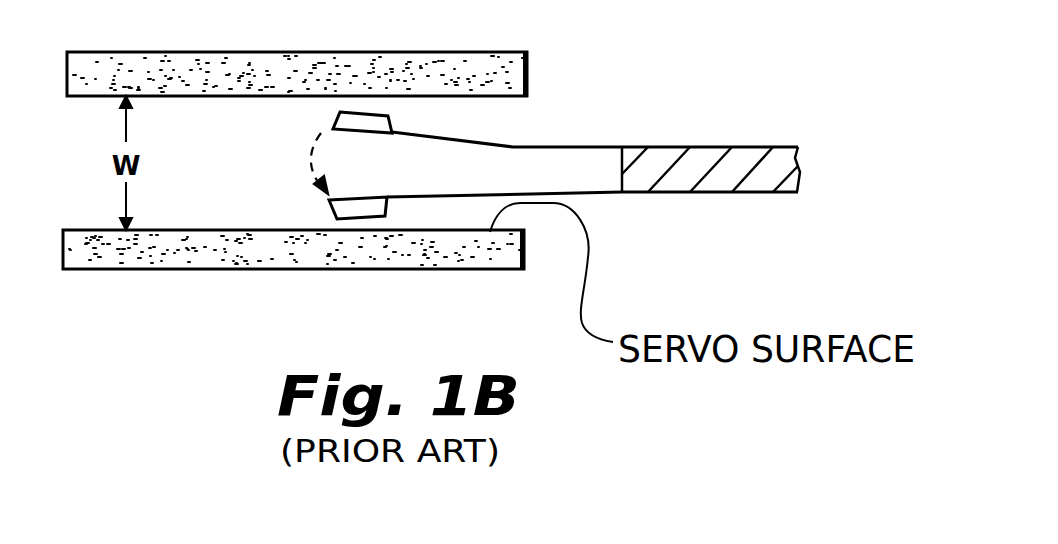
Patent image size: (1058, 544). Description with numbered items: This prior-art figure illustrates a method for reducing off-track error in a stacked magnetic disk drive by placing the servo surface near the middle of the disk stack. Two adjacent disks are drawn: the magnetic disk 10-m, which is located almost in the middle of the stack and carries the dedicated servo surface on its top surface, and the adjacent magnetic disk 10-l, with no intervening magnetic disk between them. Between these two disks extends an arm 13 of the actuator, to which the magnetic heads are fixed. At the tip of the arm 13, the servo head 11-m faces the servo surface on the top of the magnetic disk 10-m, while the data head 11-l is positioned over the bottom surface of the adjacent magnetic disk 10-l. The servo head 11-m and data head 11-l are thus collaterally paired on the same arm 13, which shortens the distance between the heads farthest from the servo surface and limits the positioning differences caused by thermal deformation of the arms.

The magnetic disk 10-l is at (467, 52).
The magnetic disk 10-m is at (480, 270).
The data head 11-l is at (342, 112).
The servo head 11-m is at (331, 211).
The arm 13 is at (698, 160).